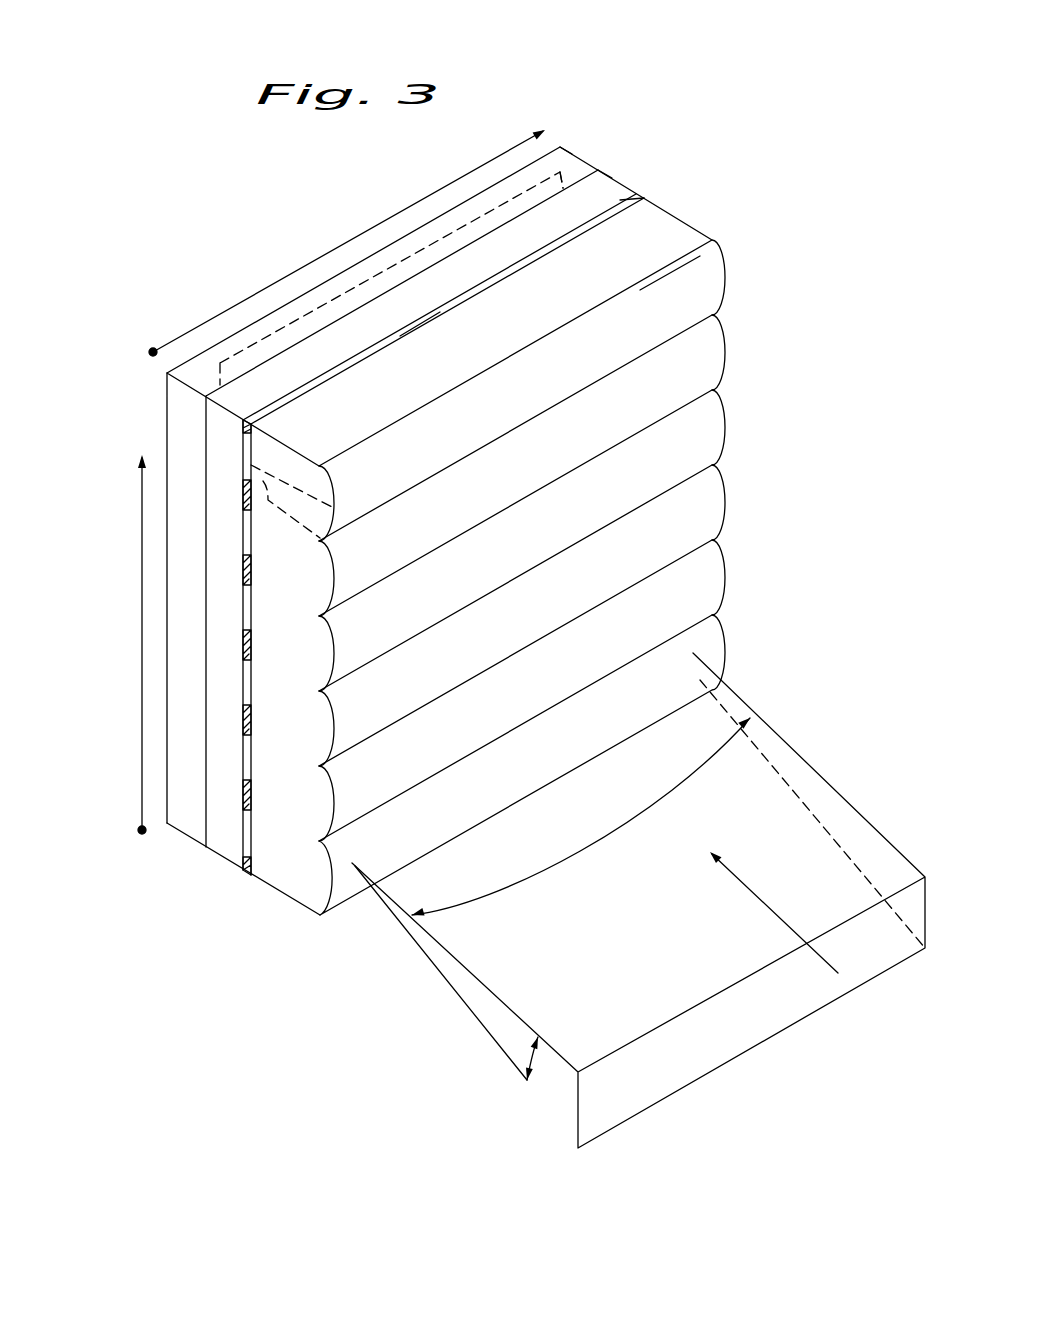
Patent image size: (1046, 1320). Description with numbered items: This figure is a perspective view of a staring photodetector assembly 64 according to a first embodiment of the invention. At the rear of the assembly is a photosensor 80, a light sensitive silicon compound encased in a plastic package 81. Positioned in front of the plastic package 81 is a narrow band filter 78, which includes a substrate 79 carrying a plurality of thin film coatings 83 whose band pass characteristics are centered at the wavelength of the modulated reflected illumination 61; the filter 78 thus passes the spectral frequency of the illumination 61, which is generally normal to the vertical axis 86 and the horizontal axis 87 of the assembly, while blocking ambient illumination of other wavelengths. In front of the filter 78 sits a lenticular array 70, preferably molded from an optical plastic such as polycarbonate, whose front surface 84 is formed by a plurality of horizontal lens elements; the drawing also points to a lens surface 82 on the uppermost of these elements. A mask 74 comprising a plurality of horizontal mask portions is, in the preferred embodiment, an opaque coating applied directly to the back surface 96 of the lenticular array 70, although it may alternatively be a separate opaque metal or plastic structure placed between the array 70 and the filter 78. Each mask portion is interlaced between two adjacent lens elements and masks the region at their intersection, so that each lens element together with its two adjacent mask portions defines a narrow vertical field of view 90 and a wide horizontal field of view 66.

The modulated reflected illumination 61 is at (745, 885).
The staring photodetector assembly 64 is at (742, 175).
The wide horizontal field of view 66 is at (607, 837).
The lenticular array 70 is at (693, 220).
The mask 74 is at (262, 410).
The narrow band filter 78 is at (586, 178).
The substrate 79 is at (608, 190).
The photosensor 80 is at (580, 152).
The plastic package 81 is at (560, 144).
The lens surface 82 is at (663, 277).
The thin film coatings 83 is at (632, 190).
The front surface 84 is at (428, 427).
The vertical axis 86 is at (140, 490).
The horizontal axis 87 is at (415, 202).
The narrow vertical field of view 90 is at (533, 1058).
The back surface 96 is at (257, 832).